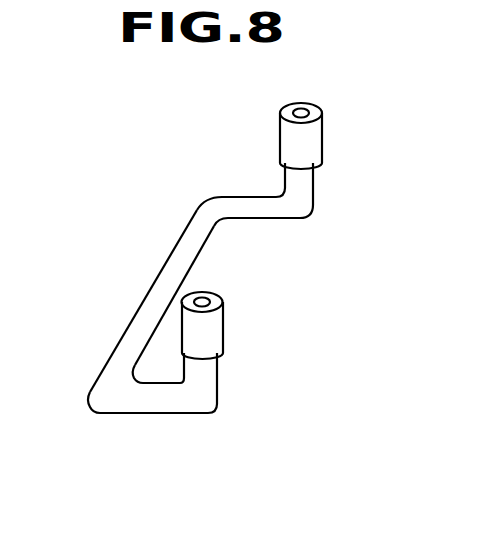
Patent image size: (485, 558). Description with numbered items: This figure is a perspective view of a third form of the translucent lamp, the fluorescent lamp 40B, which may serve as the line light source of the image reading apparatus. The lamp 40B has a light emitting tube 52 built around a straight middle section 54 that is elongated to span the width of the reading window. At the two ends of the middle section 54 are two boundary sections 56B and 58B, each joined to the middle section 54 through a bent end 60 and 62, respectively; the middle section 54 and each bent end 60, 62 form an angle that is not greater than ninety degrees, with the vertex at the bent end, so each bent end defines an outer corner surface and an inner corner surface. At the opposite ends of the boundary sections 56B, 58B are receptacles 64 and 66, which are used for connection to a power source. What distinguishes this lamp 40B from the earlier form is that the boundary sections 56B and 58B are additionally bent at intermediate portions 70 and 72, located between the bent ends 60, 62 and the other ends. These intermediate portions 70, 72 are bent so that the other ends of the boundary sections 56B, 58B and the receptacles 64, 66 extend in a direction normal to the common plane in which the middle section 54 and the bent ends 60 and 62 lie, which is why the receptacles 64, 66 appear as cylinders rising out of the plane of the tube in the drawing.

The fluorescent lamp 40B is at (95, 237).
The light emitting tube 52 is at (133, 298).
The middle section 54 is at (198, 255).
The boundary section 56B is at (147, 417).
The boundary section 58B is at (317, 187).
The bent end 60 is at (87, 413).
The bent end 62 is at (217, 197).
The receptacle 64 is at (223, 323).
The receptacle 66 is at (322, 133).
The intermediate portion 70 is at (213, 415).
The intermediate portion 72 is at (313, 207).